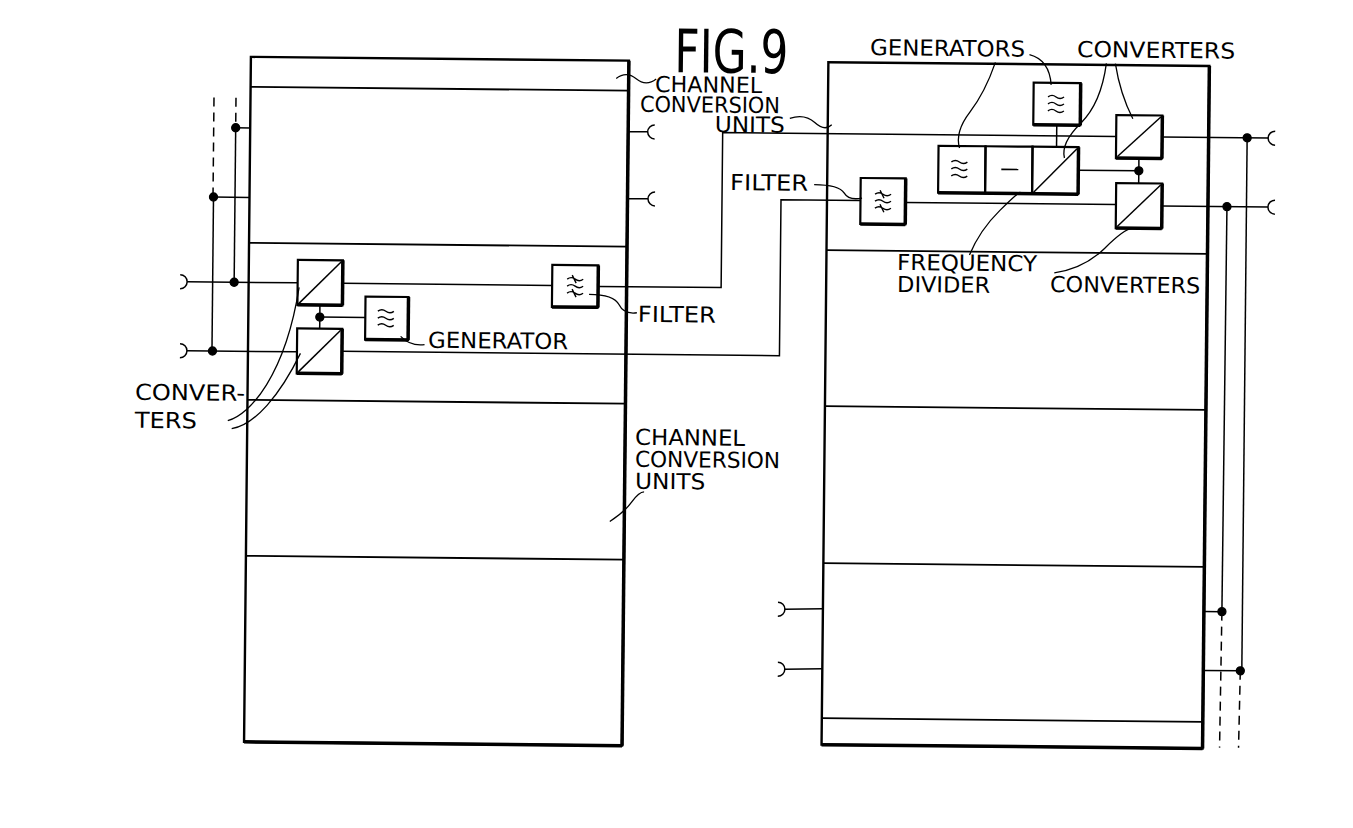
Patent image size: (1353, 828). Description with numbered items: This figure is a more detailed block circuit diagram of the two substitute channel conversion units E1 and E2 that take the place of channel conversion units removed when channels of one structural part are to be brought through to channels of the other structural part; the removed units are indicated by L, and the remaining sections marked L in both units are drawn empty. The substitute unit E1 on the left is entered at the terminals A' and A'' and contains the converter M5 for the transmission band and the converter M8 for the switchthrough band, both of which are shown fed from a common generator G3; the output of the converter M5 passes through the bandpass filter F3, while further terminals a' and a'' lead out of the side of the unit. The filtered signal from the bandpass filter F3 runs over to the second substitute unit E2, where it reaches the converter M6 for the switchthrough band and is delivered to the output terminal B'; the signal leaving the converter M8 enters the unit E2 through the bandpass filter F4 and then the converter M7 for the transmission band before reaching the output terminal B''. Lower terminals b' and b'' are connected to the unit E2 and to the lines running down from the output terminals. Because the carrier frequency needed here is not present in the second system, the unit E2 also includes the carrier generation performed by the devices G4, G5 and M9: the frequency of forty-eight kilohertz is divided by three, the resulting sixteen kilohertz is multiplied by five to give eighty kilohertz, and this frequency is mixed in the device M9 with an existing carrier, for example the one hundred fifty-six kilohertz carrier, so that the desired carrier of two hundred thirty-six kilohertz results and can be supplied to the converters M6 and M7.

The substitute channel conversion unit E1 is at (625, 402).
The substitute channel conversion unit E2 is at (1016, 405).
The removed channel conversion units L is at (730, 482).
The converter for the transmission band M5 is at (342, 268).
The converter for the switchthrough band M8 is at (342, 374).
The generator G3 is at (408, 321).
The bandpass filter F3 is at (551, 272).
The bandpass filter F4 is at (904, 215).
The carrier generation device G4 is at (936, 171).
The carrier generation device M9 is at (1052, 192).
The carrier generation device G5 is at (1031, 92).
The converter for the switchthrough band M6 is at (1161, 112).
The converter for the transmission band M7 is at (1160, 208).
The input terminal A' is at (227, 195).
The input terminal A'' is at (224, 230).
The output terminal a' is at (654, 131).
The output terminal a'' is at (656, 198).
The output terminal B' is at (1229, 437).
The output terminal B'' is at (1232, 472).
The input terminal b' is at (986, 613).
The input terminal b'' is at (994, 673).